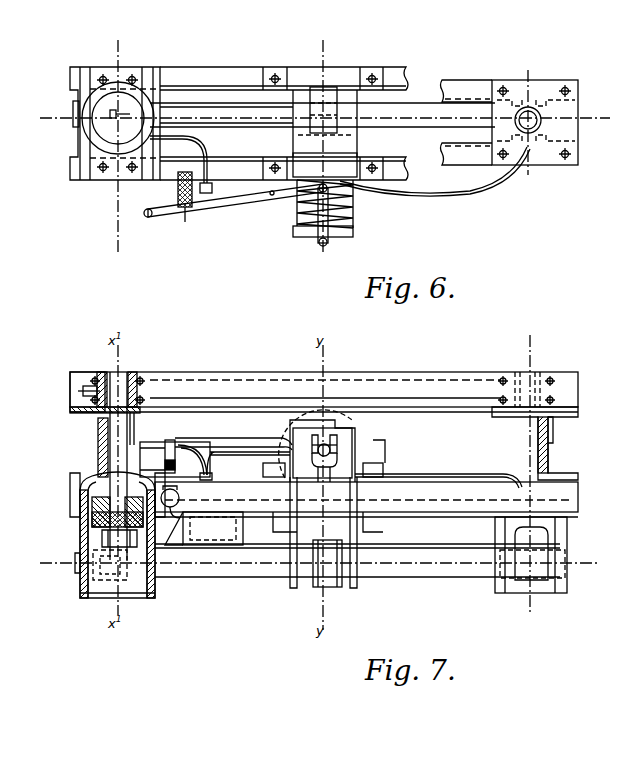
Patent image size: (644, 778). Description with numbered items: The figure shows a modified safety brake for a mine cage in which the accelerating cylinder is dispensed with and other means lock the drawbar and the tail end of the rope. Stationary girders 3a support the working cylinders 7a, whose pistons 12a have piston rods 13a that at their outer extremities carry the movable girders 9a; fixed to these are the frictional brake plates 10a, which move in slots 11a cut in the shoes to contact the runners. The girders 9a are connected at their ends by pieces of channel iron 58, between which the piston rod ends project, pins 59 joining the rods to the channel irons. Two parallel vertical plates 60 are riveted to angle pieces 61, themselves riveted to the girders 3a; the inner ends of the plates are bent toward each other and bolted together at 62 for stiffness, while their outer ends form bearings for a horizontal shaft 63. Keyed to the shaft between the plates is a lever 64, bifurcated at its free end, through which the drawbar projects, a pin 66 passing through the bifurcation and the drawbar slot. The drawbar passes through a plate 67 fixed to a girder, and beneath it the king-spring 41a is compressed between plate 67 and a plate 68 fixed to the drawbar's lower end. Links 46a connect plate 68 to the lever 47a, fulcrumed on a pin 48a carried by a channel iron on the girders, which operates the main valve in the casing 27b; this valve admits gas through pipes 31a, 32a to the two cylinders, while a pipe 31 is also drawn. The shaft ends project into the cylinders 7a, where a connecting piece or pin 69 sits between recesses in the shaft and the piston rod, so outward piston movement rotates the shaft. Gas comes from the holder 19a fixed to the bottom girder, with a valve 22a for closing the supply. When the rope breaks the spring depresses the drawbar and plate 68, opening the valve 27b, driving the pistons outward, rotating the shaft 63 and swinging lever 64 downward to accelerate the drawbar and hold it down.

In FIG. 6, the stationary girders 3a is at (284, 123).
In FIG. 7, the stationary girders 3a is at (367, 499).
In FIG. 6, the working cylinders 7a is at (84, 128).
In FIG. 7, the working cylinders 7a is at (80, 585).
In FIG. 6, the movable girders 9a is at (478, 82).
In FIG. 7, the movable girders 9a is at (324, 392).
In FIG. 6, the frictional brake plates 10a is at (545, 82).
In FIG. 7, the frictional brake plates 10a is at (578, 409).
In FIG. 7, the slots 11a is at (95, 416).
In FIG. 7, the pistons 12a is at (90, 520).
In FIG. 7, the piston rods 13a is at (100, 445).
In FIG. 7, the gas holder 19a is at (200, 520).
In FIG. 7, the valve 22a is at (180, 494).
In FIG. 6, the main valve 27b is at (184, 174).
In FIG. 7, the main valve 27b is at (175, 445).
In FIG. 7, the pipe 31 is at (200, 448).
In FIG. 6, the pipe 31a is at (201, 138).
In FIG. 6, the pipe 32a is at (482, 180).
In FIG. 7, the pipe 32a is at (258, 455).
In FIG. 6, the king-spring 41a is at (355, 205).
In FIG. 6, the links 46a is at (316, 240).
In FIG. 6, the lever 47a is at (240, 200).
In FIG. 7, the lever 47a is at (250, 450).
In FIG. 6, the pin 48a is at (152, 222).
In FIG. 7, the pin 48a is at (150, 442).
In FIG. 7, the channel iron pieces 58 is at (100, 372).
In FIG. 7, the pins 59 is at (80, 384).
In FIG. 6, the parallel vertical plates 60 is at (355, 135).
In FIG. 7, the parallel vertical plates 60 is at (292, 590).
In FIG. 6, the angle pieces 61 is at (266, 70).
In FIG. 7, the angle pieces 61 is at (255, 522).
In FIG. 7, the bolted connection 62 is at (348, 428).
In FIG. 6, the shaft 63 is at (140, 112).
In FIG. 7, the shaft 63 is at (195, 582).
In FIG. 6, the lever 64 is at (330, 90).
In FIG. 7, the lever 64 is at (330, 453).
In FIG. 7, the pin 66 is at (340, 440).
In FIG. 7, the plate 67 is at (305, 418).
In FIG. 6, the plate 68 is at (353, 232).
In FIG. 7, the plate 68 is at (152, 459).
In FIG. 7, the connecting piece or pin 69 is at (128, 557).